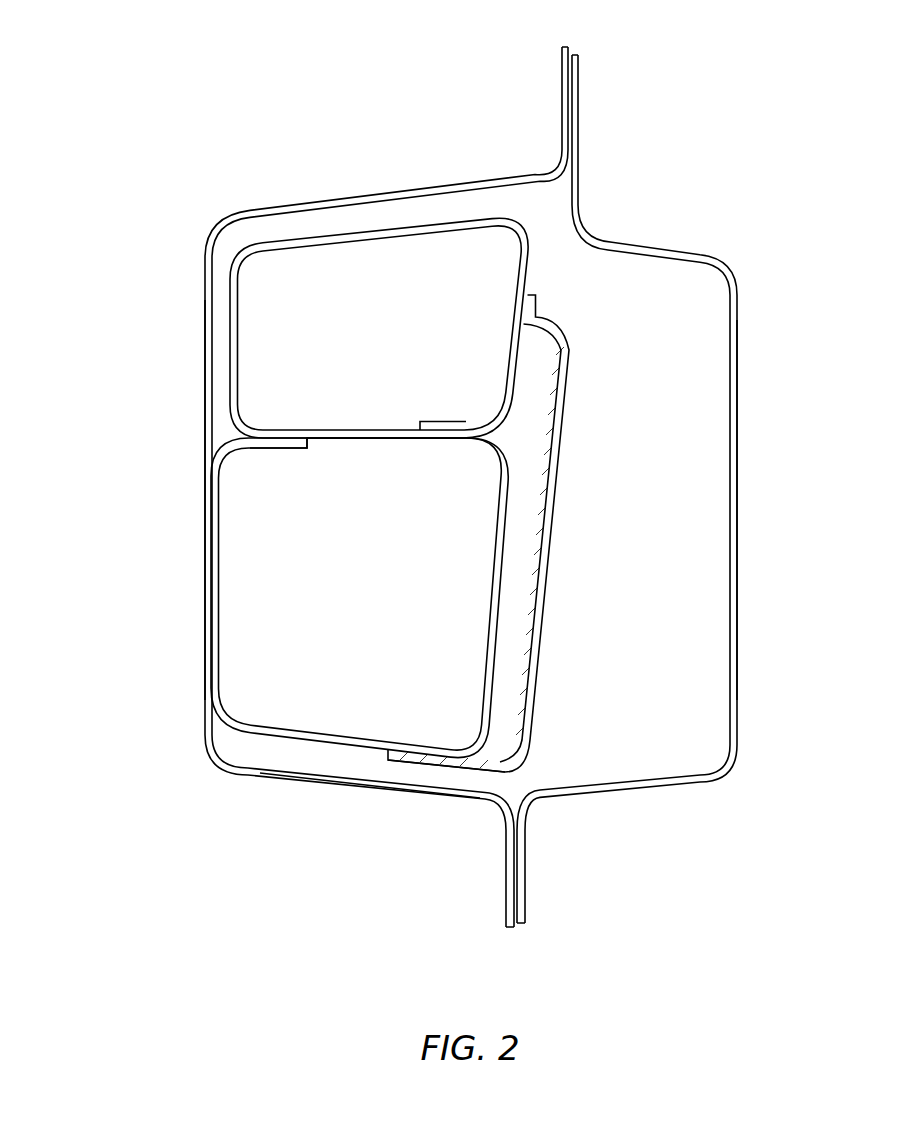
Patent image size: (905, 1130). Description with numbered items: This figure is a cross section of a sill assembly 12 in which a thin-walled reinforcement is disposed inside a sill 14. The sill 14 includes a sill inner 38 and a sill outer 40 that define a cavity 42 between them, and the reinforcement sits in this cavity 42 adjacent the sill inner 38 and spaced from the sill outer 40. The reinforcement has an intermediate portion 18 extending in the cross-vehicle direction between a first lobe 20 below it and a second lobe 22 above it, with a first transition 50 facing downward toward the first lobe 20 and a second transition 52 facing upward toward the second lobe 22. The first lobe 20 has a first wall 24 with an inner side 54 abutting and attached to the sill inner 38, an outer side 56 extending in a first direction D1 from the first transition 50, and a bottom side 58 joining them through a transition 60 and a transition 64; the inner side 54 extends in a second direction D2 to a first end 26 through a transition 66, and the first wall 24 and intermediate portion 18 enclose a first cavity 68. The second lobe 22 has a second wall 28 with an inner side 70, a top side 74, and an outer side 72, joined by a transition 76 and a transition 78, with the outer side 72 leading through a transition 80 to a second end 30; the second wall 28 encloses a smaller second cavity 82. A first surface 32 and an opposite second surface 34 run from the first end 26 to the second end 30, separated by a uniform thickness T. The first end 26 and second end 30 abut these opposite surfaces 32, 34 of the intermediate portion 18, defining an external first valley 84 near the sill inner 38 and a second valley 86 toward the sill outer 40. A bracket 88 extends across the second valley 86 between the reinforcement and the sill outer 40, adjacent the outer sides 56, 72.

The sill assembly 12 is at (718, 79).
The sill 14 is at (700, 250).
The intermediate portion 18 is at (315, 428).
The first lobe 20 is at (498, 647).
The second lobe 22 is at (533, 235).
The first wall 24 is at (267, 742).
The first end 26 is at (297, 450).
The second wall 28 is at (476, 210).
The second end 30 is at (439, 418).
The first surface 32 is at (349, 430).
The second surface 34 is at (376, 440).
The sill inner 38 is at (236, 212).
The sill outer 40 is at (738, 382).
The cavity 42 is at (674, 505).
The first transition 50 is at (483, 453).
The second transition 52 is at (250, 412).
The inner side 54 is at (226, 574).
The outer side 56 is at (489, 596).
The bottom side 58 is at (313, 732).
The transition 60 is at (468, 737).
The transition 64 is at (230, 718).
The transition 66 is at (232, 457).
The first cavity 68 is at (375, 683).
The inner side 70 is at (243, 320).
The outer side 72 is at (518, 300).
The top side 74 is at (374, 242).
The transition 76 is at (250, 264).
The transition 78 is at (512, 235).
The transition 80 is at (503, 400).
The second cavity 82 is at (414, 312).
The first valley 84 is at (241, 432).
The second valley 86 is at (492, 435).
The bracket 88 is at (570, 372).
The thickness T is at (323, 272).
The first direction D1 is at (112, 338).
The second direction D2 is at (112, 460).